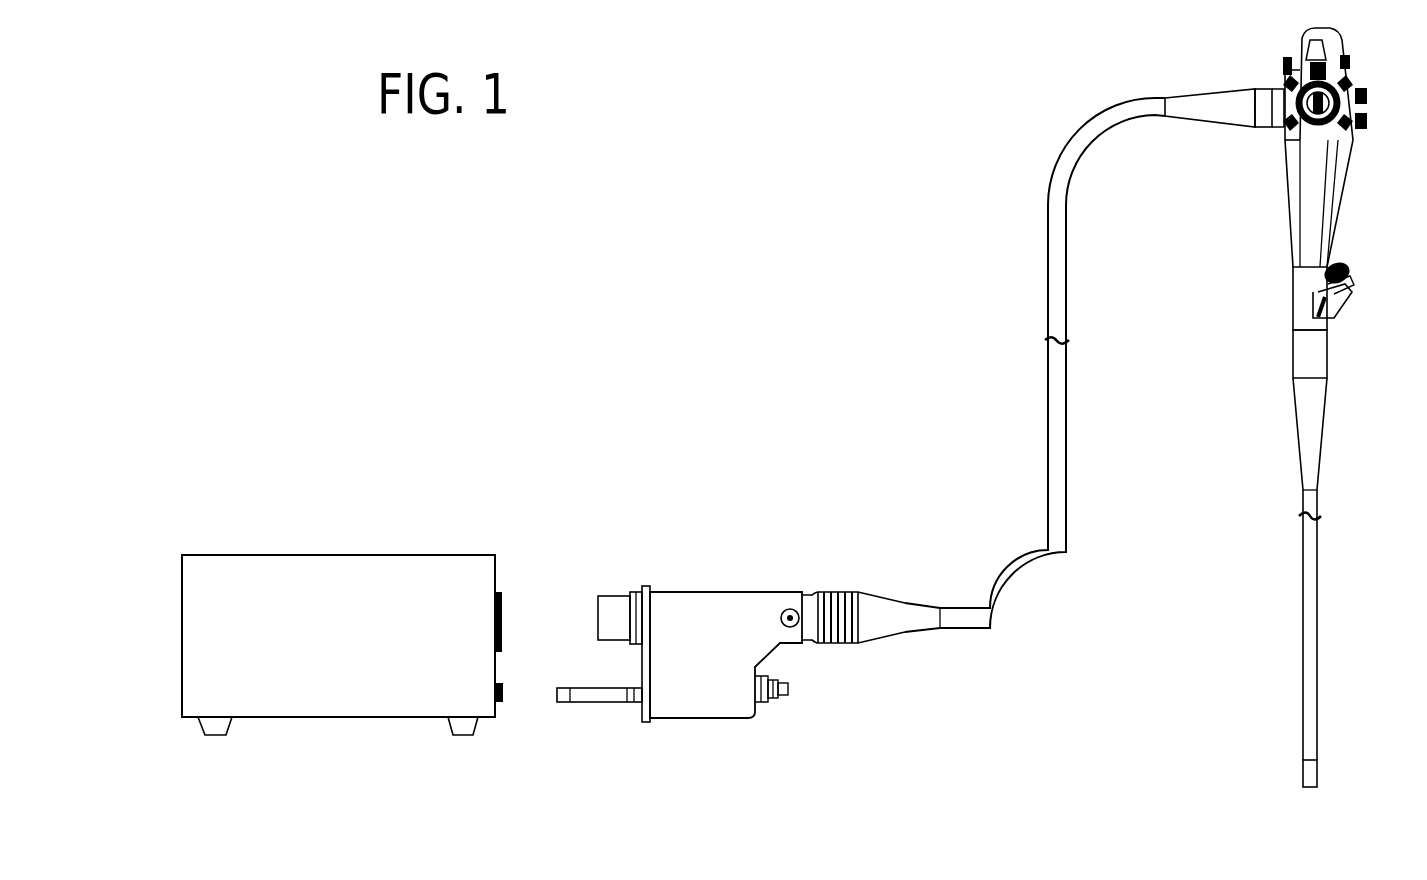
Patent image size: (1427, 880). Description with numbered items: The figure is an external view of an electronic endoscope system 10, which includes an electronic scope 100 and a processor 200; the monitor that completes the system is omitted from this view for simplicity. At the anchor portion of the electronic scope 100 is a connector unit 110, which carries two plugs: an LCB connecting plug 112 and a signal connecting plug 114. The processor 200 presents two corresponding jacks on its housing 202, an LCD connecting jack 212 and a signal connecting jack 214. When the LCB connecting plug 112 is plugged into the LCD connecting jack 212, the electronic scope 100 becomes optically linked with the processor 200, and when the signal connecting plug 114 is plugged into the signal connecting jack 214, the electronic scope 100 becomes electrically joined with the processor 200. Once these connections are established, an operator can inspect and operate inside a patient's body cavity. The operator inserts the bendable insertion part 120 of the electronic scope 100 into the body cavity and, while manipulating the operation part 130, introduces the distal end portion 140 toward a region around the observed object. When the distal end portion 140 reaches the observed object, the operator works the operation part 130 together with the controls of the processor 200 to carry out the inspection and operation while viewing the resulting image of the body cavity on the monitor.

The electronic endoscope system 10 is at (712, 210).
The electronic scope 100 is at (1086, 95).
The connector unit 110 is at (722, 612).
The LCB connecting plug 112 is at (608, 697).
The signal connecting plug 114 is at (609, 613).
The bendable insertion part 120 is at (1310, 626).
The operation part 130 is at (1345, 67).
The distal end portion 140 is at (1302, 775).
The processor 200 is at (331, 553).
The housing 202 is at (327, 694).
The LCD connecting jack 212 is at (502, 695).
The signal connecting jack 214 is at (501, 614).